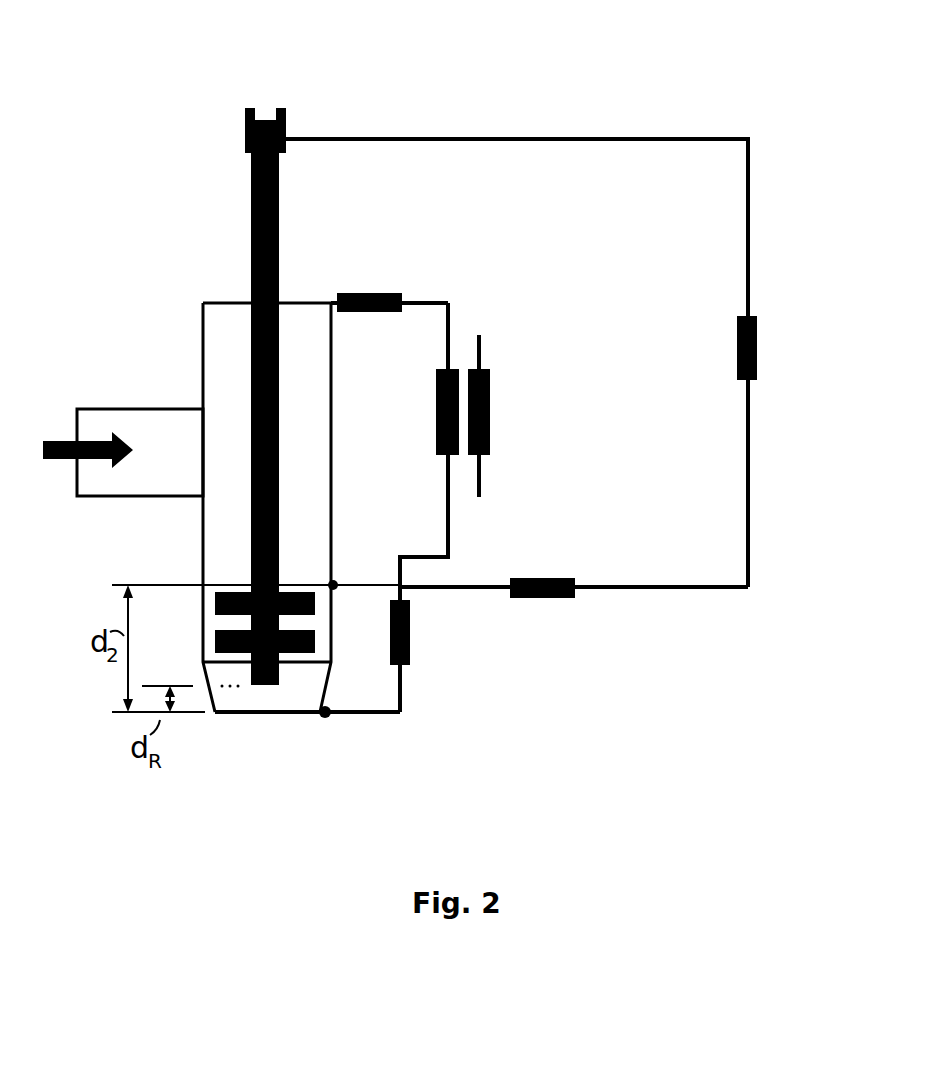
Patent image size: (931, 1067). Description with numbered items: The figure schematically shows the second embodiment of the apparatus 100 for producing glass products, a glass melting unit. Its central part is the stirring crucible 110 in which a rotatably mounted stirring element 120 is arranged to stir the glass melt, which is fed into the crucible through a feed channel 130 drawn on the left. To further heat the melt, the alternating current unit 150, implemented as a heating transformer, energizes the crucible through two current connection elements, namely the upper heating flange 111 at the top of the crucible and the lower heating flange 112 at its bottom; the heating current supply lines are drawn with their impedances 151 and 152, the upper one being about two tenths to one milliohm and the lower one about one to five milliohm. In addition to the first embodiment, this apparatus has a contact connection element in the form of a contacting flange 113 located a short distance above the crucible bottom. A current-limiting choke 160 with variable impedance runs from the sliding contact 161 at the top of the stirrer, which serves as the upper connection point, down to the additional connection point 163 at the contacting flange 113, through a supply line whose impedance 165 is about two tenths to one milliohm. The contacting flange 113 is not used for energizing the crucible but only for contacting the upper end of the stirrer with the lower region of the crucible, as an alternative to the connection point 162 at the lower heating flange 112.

The apparatus for producing glass products 100 is at (181, 82).
The stirring crucible 110 is at (201, 364).
The upper heating flange 111 is at (228, 300).
The lower heating flange 112 is at (222, 718).
The contacting flange 113 is at (217, 585).
The stirring element 120 is at (283, 246).
The feed channel 130 is at (125, 498).
The alternating current unit 150 is at (513, 335).
The impedance of the upper heating current supply line 151 is at (378, 296).
The impedance of the lower heating current supply line 152 is at (412, 652).
The current-limiting choke 160 is at (758, 346).
The sliding contact 161 is at (290, 130).
The connection point 162 is at (327, 719).
The additional connection point 163 is at (336, 581).
The impedance of the supply line of the additional connection point 165 is at (548, 600).